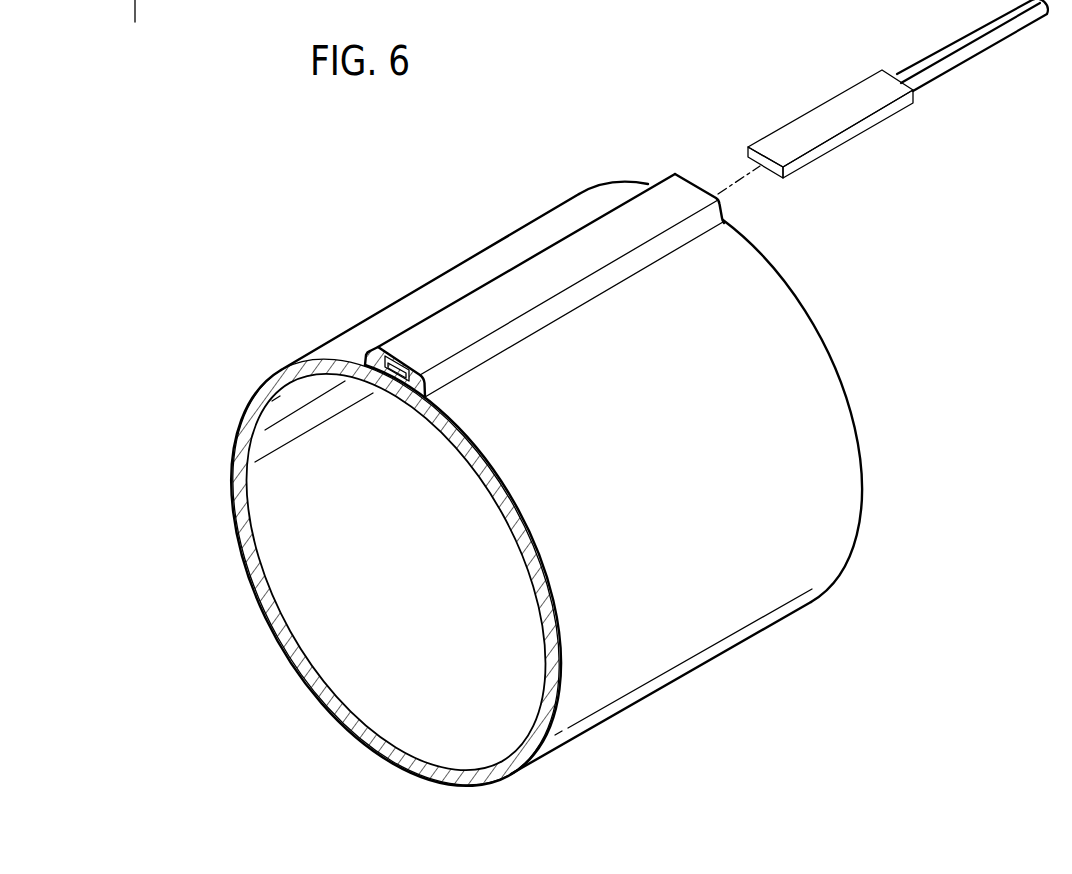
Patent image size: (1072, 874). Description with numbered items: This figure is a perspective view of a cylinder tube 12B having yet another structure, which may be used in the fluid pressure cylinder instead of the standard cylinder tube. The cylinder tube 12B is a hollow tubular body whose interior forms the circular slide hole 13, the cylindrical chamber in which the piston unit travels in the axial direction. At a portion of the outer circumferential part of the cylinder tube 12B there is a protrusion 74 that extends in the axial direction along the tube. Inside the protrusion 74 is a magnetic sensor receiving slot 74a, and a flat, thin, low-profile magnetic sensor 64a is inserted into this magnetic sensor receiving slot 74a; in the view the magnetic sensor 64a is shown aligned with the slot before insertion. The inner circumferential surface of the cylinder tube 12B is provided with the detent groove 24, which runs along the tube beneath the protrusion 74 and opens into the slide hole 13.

The cylinder tube 12B is at (370, 307).
The slide hole 13 is at (280, 535).
The protrusion 74 is at (456, 317).
The magnetic sensor receiving slot 74a is at (397, 376).
The detent groove 24 is at (404, 384).
The magnetic sensor 64a is at (795, 133).